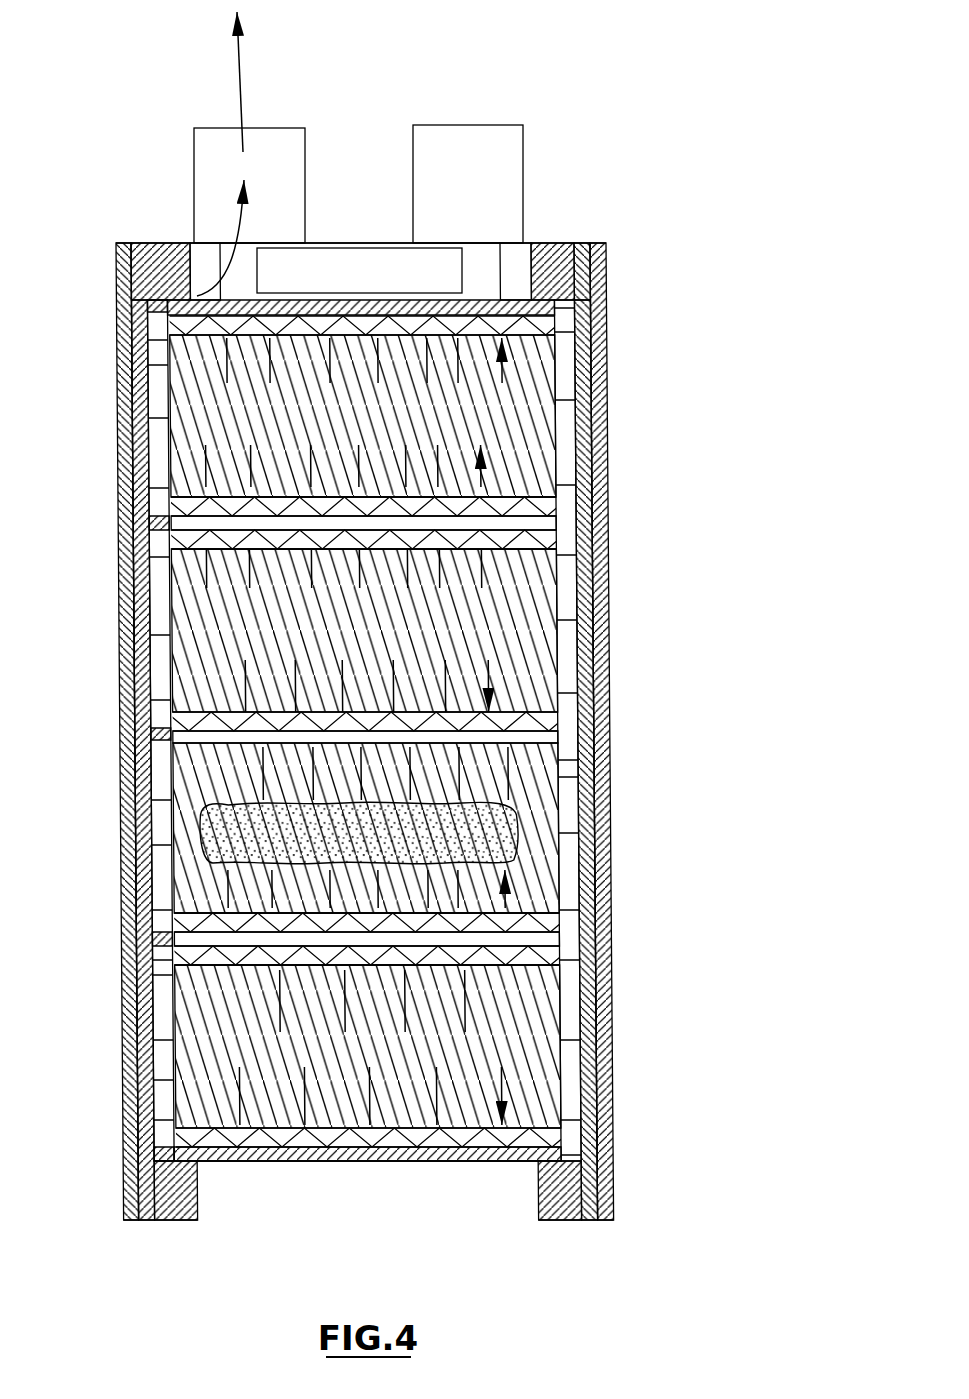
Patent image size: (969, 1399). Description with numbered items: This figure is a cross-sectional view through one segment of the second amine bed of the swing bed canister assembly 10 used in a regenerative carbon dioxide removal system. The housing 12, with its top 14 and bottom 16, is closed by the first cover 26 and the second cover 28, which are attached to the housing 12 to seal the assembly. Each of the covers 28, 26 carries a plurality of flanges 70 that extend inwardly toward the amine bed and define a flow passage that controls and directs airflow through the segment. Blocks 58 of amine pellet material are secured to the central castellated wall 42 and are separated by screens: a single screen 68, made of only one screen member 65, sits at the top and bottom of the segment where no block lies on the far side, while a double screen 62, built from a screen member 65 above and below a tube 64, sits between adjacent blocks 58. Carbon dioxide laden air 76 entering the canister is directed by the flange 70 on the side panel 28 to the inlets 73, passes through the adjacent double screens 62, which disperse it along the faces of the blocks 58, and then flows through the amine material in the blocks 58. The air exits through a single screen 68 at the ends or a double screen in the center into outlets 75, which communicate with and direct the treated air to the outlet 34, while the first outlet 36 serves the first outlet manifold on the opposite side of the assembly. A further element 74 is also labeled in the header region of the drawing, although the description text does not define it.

The swing bed canister assembly 10 is at (420, 638).
The housing 12 is at (581, 1177).
The top 14 is at (333, 292).
The bottom 16 is at (387, 1172).
The first cover 26 is at (607, 362).
The second cover 28 is at (160, 388).
The outlet 34 is at (267, 147).
The first outlet 36 is at (471, 147).
The central castellated wall 42 is at (558, 777).
The block 58 is at (510, 813).
The double screen 62 is at (557, 518).
The tube 64 is at (547, 490).
The screen member 65 is at (500, 494).
The single screen 68 is at (577, 320).
The flange 70 is at (160, 428).
The inlet 73 is at (165, 527).
The distributor 74 is at (420, 270).
The outlet 75 is at (163, 342).
The carbon dioxide laden air 76 is at (293, 1148).